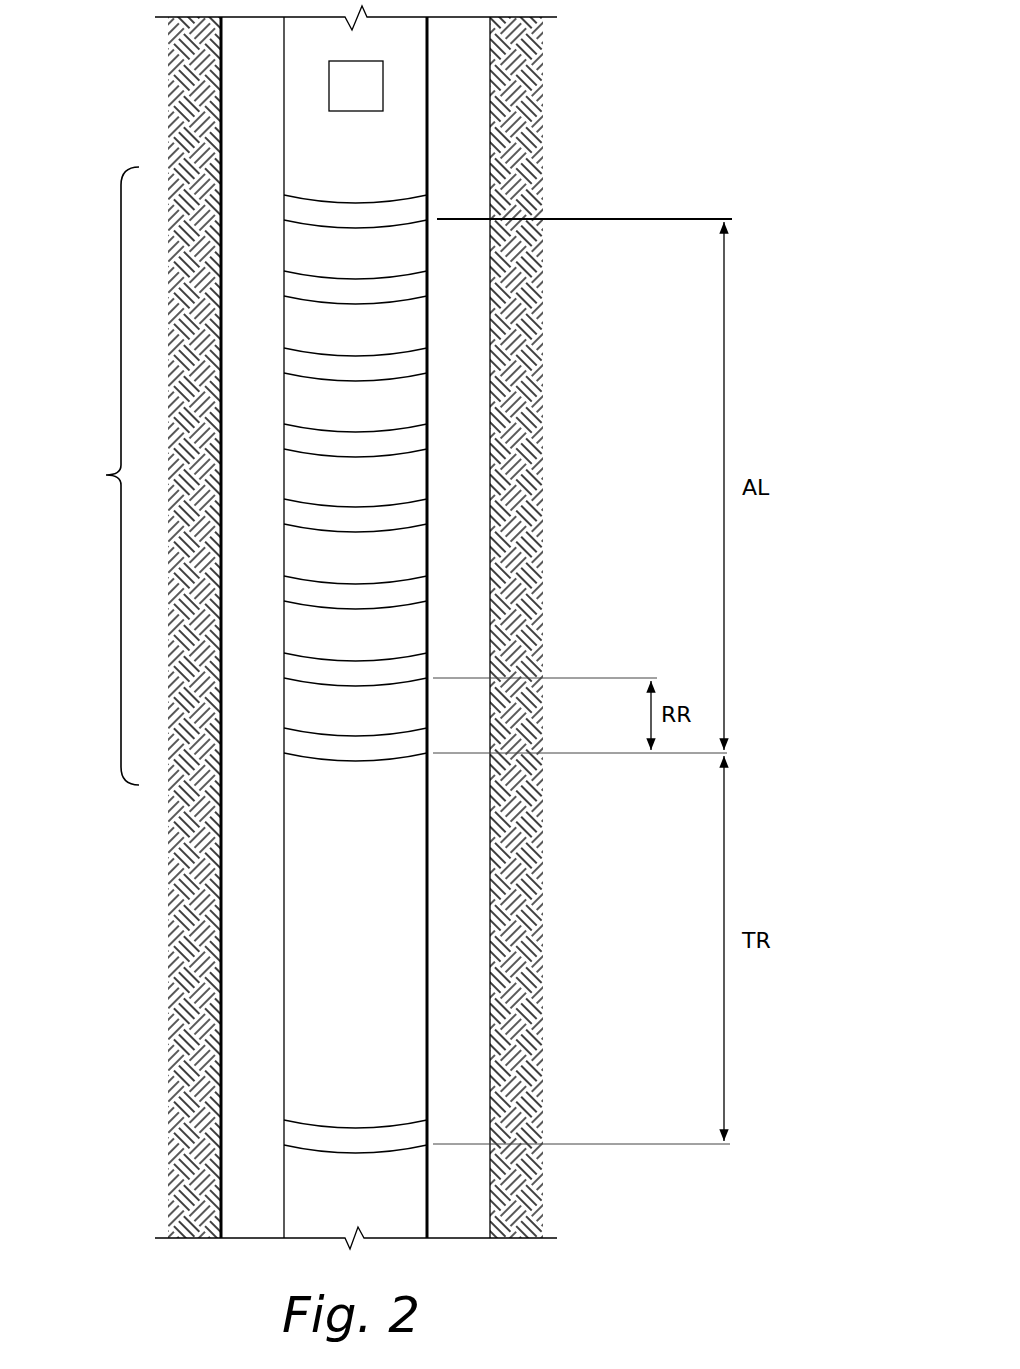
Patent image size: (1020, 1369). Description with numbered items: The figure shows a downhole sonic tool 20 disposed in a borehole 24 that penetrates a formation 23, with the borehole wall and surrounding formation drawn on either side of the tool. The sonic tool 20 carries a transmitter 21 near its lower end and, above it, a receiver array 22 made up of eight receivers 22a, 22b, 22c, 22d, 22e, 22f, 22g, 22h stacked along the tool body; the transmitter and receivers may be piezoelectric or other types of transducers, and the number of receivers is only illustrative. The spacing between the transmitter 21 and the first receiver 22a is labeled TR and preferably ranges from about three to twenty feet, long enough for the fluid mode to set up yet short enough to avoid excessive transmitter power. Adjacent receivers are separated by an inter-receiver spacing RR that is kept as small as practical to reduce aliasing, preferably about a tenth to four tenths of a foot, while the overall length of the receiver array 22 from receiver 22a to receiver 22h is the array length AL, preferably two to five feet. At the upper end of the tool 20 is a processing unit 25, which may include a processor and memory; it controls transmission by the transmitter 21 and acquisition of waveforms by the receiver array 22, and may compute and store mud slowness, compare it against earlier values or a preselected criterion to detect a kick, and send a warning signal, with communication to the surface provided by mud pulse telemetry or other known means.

The sonic tool 20 is at (291, 955).
The transmitter 21 is at (347, 1140).
The receiver array 22 is at (247, 474).
The receiver 22a is at (349, 749).
The receiver 22b is at (349, 674).
The receiver 22c is at (349, 597).
The receiver 22d is at (349, 520).
The receiver 22e is at (349, 445).
The receiver 22f is at (349, 369).
The receiver 22g is at (349, 292).
The receiver 22h is at (349, 216).
The formation 23 is at (535, 93).
The borehole 24 is at (243, 98).
The processing unit 25 is at (355, 87).